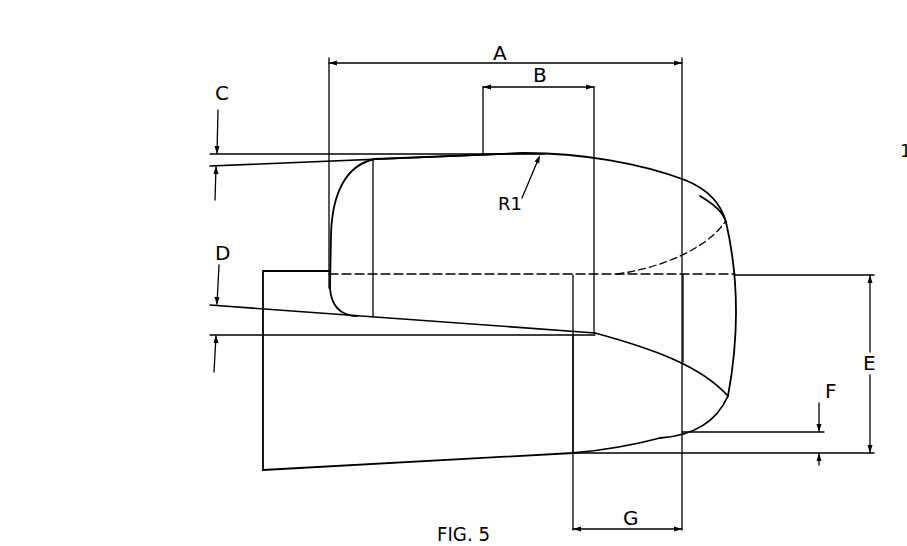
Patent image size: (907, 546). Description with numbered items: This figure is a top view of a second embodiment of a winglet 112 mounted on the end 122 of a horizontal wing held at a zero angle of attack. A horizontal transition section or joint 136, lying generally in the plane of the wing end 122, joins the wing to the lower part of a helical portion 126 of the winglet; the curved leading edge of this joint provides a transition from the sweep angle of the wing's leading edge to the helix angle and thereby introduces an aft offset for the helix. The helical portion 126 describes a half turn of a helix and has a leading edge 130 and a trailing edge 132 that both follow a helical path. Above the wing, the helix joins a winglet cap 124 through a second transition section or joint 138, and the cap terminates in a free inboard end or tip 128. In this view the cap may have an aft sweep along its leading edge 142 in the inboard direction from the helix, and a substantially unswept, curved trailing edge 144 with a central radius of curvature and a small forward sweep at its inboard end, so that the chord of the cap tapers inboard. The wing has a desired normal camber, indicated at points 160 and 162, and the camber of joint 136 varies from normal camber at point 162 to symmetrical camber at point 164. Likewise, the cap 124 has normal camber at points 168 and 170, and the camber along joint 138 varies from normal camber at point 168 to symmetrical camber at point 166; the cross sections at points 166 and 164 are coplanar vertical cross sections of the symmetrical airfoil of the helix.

The winglet 112 is at (729, 124).
The wing end 122 is at (490, 458).
The winglet cap 124 is at (454, 146).
The helical portion 126 is at (744, 298).
The free inboard end or tip 128 is at (328, 288).
The leading edge 130 is at (720, 408).
The trailing edge 132 is at (705, 189).
The horizontal transition section or joint 136 is at (614, 454).
The transition section or joint 138 is at (631, 163).
The leading edge of the cap 142 is at (450, 323).
The curved trailing edge of the cap 144 is at (517, 154).
The point of normal camber on the wing 160 is at (263, 430).
The point of normal camber at the joint 162 is at (573, 402).
The point of symmetrical camber at the lower joint 164 is at (683, 393).
The point of symmetrical camber at the upper joint 166 is at (683, 318).
The point of normal camber on the cap 168 is at (594, 244).
The point of normal camber on the cap 170 is at (373, 218).